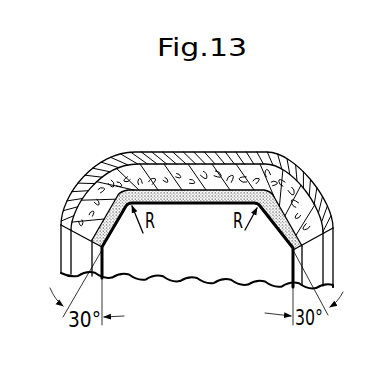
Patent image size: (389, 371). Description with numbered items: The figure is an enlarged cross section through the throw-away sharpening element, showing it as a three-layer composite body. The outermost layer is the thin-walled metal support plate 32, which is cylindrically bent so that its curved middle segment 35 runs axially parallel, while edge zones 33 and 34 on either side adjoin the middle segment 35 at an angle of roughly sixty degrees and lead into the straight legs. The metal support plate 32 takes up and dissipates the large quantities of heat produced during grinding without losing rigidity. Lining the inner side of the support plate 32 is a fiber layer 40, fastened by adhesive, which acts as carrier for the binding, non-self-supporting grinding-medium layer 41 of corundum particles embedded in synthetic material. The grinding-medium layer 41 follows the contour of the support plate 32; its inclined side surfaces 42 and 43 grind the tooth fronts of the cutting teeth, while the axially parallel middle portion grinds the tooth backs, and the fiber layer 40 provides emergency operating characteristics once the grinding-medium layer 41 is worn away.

The support plate 32 is at (100, 172).
The edge zone 33 is at (80, 203).
The edge zone 34 is at (308, 185).
The middle segment 35 is at (188, 152).
The fiber layer 40 is at (142, 173).
The grinding-medium layer 41 is at (183, 194).
The inclined side surface 42 is at (117, 235).
The inclined side surface 43 is at (282, 227).